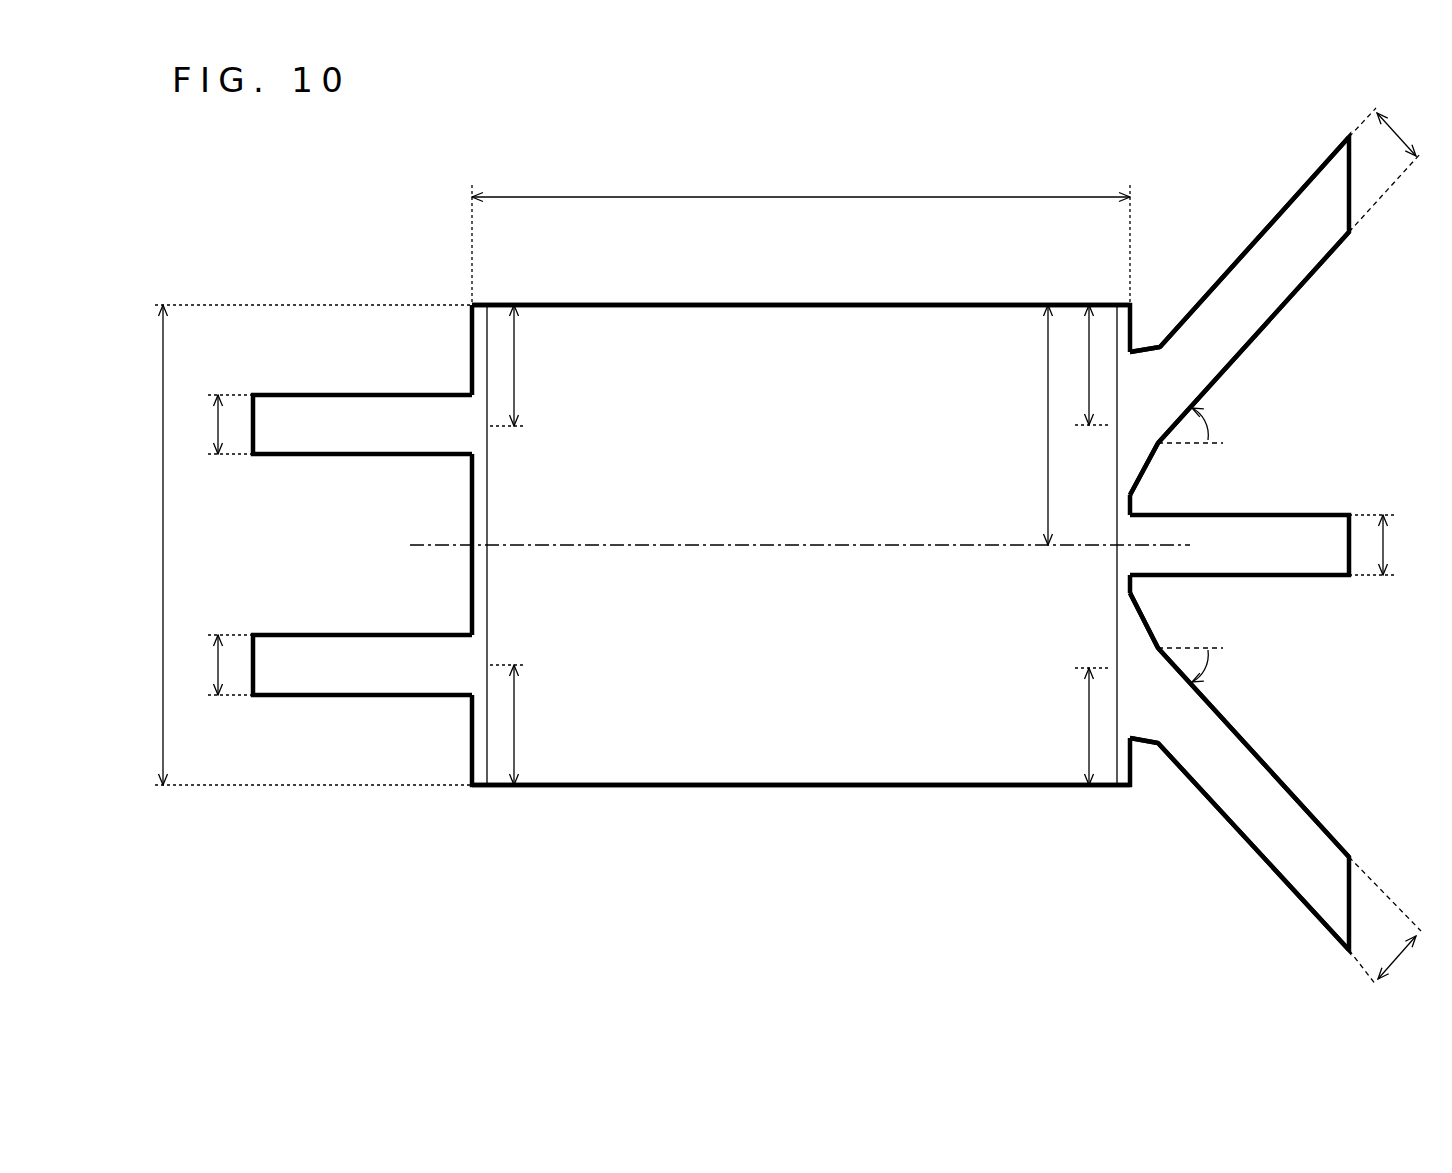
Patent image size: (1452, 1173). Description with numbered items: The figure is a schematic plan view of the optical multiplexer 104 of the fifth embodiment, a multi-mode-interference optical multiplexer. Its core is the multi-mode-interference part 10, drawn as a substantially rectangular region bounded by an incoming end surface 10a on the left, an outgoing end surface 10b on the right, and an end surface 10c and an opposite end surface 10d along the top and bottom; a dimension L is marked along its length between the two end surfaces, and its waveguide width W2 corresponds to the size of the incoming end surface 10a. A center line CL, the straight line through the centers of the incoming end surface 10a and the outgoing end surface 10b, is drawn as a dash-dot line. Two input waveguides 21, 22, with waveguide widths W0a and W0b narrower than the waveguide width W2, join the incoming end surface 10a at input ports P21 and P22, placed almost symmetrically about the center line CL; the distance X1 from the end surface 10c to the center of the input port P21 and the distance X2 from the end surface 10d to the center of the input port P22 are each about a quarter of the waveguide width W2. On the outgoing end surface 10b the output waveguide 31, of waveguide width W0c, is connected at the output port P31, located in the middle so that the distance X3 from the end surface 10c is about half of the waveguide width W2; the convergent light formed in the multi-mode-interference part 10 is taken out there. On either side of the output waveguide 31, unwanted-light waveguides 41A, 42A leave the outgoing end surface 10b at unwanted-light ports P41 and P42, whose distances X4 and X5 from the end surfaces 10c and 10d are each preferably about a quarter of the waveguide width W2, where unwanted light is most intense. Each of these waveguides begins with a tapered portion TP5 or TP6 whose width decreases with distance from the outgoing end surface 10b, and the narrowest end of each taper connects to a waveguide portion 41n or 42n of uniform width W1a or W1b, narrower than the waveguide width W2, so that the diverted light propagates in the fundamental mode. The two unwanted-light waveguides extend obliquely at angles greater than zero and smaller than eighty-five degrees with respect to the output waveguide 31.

The optical multiplexer 104 is at (387, 198).
The multi-mode-interference part 10 is at (676, 365).
The incoming end surface 10a is at (488, 510).
The outgoing end surface 10b is at (1116, 580).
The end surface 10c is at (805, 301).
The end surface 10d is at (807, 789).
The input waveguide 21 is at (340, 437).
The input waveguide 22 is at (347, 657).
The output waveguide 31 is at (1268, 532).
The unwanted-light waveguide 41A is at (1237, 230).
The waveguide portion 41n is at (1210, 325).
The unwanted-light waveguide 42A is at (1237, 865).
The waveguide portion 42n is at (1210, 768).
The tapered portion TP5 is at (1143, 400).
The tapered portion TP6 is at (1143, 690).
The input port P21 is at (469, 426).
The input port P22 is at (469, 666).
The output port P31 is at (1134, 558).
The unwanted-light port P41 is at (1138, 424).
The unwanted-light port P42 is at (1139, 666).
The center line CL is at (437, 549).
The length of base L is at (801, 234).
The waveguide width W2 is at (300, 545).
The waveguide width W0a is at (212, 424).
The waveguide width W0b is at (212, 665).
The waveguide width W0c is at (1393, 545).
The width W1a is at (1394, 167).
The width W1b is at (1394, 922).
The distance X1 is at (519, 365).
The distance X2 is at (519, 725).
The distance X3 is at (1033, 425).
The distance X4 is at (1084, 365).
The distance X5 is at (1084, 726).